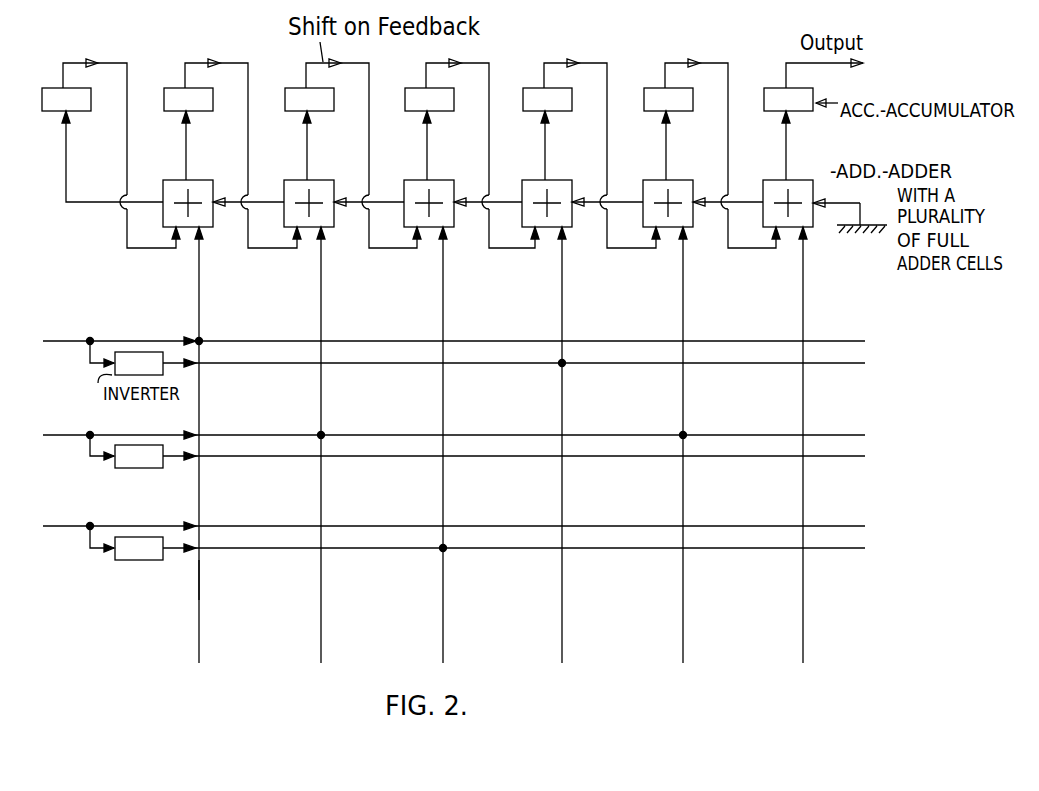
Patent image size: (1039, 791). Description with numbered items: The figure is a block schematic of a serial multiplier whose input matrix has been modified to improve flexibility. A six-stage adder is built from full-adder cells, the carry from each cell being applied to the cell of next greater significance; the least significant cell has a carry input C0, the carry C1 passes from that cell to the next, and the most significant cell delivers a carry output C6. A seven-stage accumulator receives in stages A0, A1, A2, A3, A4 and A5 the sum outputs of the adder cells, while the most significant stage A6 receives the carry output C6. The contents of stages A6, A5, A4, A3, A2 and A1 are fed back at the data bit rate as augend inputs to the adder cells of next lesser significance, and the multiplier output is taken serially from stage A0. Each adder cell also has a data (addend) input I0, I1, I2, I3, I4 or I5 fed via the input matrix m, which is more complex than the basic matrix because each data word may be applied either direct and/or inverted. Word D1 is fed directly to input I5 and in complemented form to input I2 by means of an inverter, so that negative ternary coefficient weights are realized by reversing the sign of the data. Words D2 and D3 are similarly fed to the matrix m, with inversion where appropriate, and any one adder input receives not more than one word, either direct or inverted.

The accumulator stage A0 is at (813, 85).
The accumulator stage A1 is at (712, 153).
The accumulator stage A2 is at (591, 153).
The accumulator stage A3 is at (472, 153).
The accumulator stage A4 is at (353, 153).
The accumulator stage A5 is at (232, 153).
The most significant accumulator stage A6 is at (111, 153).
The adder data input I0 is at (803, 445).
The adder data input I1 is at (683, 445).
The adder data input I2 is at (562, 445).
The adder data input I3 is at (444, 445).
The adder data input I4 is at (324, 445).
The adder data input I5 is at (199, 445).
The carry input C0 is at (850, 211).
The carry C1 is at (728, 191).
The carry output C6 is at (112, 173).
The serial data word D1 is at (454, 339).
The serial data word D2 is at (454, 432).
The serial data word D3 is at (454, 524).
The input matrix m is at (186, 573).